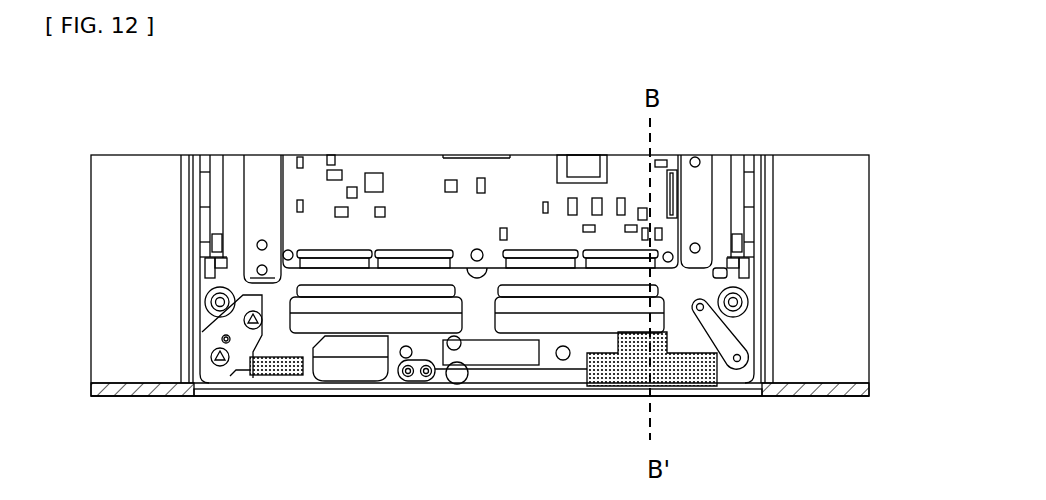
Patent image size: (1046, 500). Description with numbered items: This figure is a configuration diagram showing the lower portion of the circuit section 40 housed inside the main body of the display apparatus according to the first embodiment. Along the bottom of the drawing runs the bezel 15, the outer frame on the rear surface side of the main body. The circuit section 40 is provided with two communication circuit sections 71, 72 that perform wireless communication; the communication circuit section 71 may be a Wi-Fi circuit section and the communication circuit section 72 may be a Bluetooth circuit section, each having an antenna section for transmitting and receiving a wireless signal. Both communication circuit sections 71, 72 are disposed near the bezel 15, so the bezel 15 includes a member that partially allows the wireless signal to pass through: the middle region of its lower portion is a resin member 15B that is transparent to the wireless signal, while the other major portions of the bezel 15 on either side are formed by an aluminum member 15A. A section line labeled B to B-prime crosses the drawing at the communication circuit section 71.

The circuit section 40 is at (788, 224).
The bezel 15 is at (877, 389).
The aluminum member 15A is at (140, 397).
The resin member 15B is at (728, 397).
The communication circuit section 71 is at (620, 386).
The communication circuit section 72 is at (283, 378).